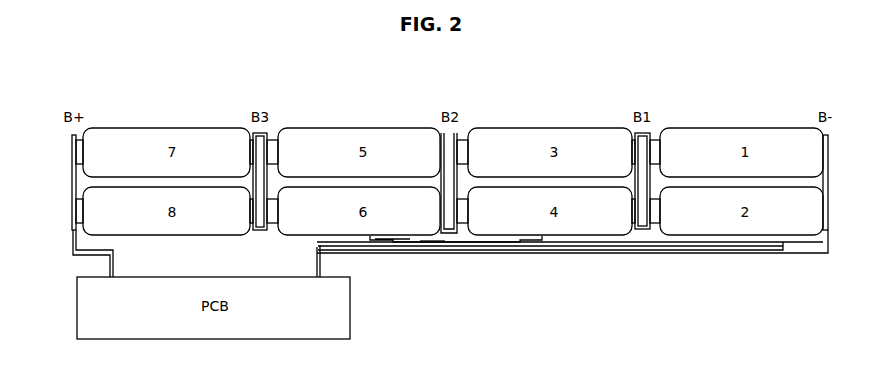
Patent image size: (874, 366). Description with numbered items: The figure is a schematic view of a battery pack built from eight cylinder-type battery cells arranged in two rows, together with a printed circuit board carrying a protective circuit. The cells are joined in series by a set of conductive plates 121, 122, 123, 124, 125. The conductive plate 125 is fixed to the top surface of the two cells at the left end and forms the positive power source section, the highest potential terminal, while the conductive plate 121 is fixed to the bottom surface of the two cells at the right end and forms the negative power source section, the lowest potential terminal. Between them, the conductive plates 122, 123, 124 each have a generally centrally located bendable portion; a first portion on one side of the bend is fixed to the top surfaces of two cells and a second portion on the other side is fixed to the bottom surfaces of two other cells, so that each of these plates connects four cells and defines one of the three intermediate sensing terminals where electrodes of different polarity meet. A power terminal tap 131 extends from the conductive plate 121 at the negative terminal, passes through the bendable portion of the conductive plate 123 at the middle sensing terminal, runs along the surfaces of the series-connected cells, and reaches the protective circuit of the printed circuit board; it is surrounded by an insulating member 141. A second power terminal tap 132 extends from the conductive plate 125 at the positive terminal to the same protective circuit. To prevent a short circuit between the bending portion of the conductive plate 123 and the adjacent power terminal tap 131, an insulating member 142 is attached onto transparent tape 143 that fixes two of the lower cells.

The conductive plate 121 is at (822, 145).
The conductive plate 122 is at (632, 145).
The conductive plate 123 is at (436, 142).
The conductive plate 124 is at (242, 138).
The conductive plate 125 is at (72, 182).
The power terminal tap 131 is at (810, 256).
The power terminal tap 132 is at (72, 243).
The insulating member 141 is at (700, 254).
The insulating member 142 is at (476, 245).
The transparent tape 143 is at (428, 240).